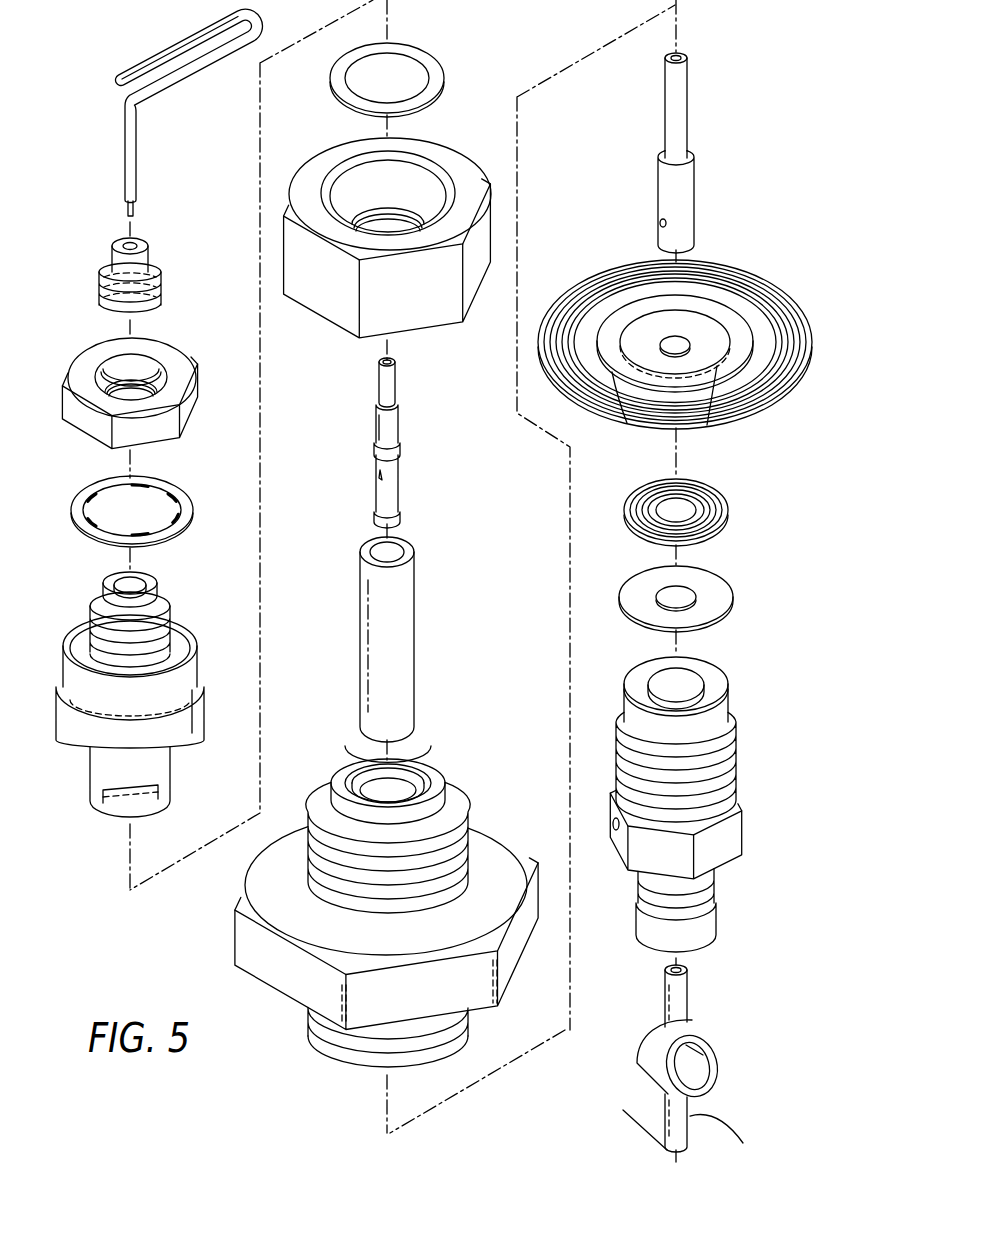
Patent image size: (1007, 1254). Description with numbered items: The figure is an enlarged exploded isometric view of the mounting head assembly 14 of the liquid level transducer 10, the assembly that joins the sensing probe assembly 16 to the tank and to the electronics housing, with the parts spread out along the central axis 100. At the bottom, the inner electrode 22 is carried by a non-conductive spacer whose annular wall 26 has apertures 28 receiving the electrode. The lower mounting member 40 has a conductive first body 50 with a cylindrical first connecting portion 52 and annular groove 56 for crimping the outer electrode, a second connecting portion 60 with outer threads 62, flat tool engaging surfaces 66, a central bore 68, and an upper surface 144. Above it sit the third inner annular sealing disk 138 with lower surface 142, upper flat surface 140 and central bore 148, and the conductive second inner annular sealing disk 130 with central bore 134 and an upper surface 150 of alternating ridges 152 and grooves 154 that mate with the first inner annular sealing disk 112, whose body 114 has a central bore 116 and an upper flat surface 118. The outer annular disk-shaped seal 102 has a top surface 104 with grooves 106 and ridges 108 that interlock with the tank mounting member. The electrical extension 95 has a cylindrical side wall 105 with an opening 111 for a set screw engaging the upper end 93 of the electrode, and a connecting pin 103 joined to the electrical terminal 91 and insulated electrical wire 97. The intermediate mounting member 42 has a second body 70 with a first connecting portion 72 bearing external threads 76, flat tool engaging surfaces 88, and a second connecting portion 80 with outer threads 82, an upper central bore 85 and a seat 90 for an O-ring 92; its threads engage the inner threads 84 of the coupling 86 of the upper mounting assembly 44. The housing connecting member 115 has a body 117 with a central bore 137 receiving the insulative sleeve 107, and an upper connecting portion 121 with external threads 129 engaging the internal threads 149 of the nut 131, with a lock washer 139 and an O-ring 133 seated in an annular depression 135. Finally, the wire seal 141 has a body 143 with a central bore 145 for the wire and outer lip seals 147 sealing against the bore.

The liquid level transducer 10 is at (734, 82).
The mounting head assembly 14 is at (489, 84).
The sensing probe assembly 16 is at (707, 1058).
The inner electrode 22 is at (680, 1108).
The annular wall 26 is at (674, 1056).
The apertures 28 is at (690, 1062).
The lower mounting member 40 is at (705, 790).
The intermediate mounting member 42 is at (353, 915).
The upper mounting assembly 44 is at (69, 327).
The first body 50 is at (699, 725).
The first connecting portion 52 is at (713, 918).
The annular groove 56 is at (717, 890).
The second connecting portion 60 is at (627, 709).
The outer threads 62 is at (616, 770).
The flat tool engaging surfaces 66 is at (732, 840).
The central bore 68 is at (687, 669).
The second body 70 is at (350, 1053).
The first connecting portion 72 is at (357, 1065).
The external threads 76 is at (333, 1045).
The second connecting portion 80 is at (330, 778).
The outer threads 82 is at (308, 838).
The inner threads 84 is at (352, 195).
The upper central bore 85 is at (410, 742).
The coupling 86 is at (388, 223).
The flat tool engaging surfaces 88 is at (270, 978).
The upper step or seat 90 is at (405, 785).
The electrical terminal 91 is at (395, 420).
The O-ring 92 is at (360, 740).
The upper end 93 is at (682, 985).
The electrical extension 95 is at (674, 202).
The insulated electrical wire 97 is at (163, 58).
The central axis 100 is at (432, 624).
The outer annular disk-shaped seal 102 is at (706, 348).
The connecting pin 103 is at (681, 118).
The top surface 104 is at (730, 283).
The cylindrical side wall 105 is at (663, 179).
The grooves 106 is at (795, 332).
The insulative sleeve 107 is at (425, 613).
The ridges 108 is at (797, 355).
The opening 111 is at (661, 224).
The first inner annular sealing disk 112 is at (735, 334).
The body 114 is at (623, 424).
The housing connecting member 115 is at (183, 683).
The central bore 116 is at (657, 337).
The body 117 is at (168, 782).
The upper flat surface 118 is at (704, 425).
The upper connecting portion 121 is at (101, 598).
The external threads 129 is at (190, 672).
The second inner annular sealing disk 130 is at (690, 513).
The nut 131 is at (159, 397).
The O-ring 133 is at (409, 52).
The central bore 134 is at (645, 512).
The annular depression 135 is at (178, 628).
The central bore 137 is at (124, 578).
The third inner annular sealing disk 138 is at (693, 607).
The lock washer 139 is at (187, 508).
The upper flat surface 140 is at (723, 590).
The wire seal 141 is at (150, 258).
The lower surface 142 is at (628, 622).
The body 143 is at (150, 270).
The upper surface 144 is at (724, 687).
The central bore 145 is at (127, 243).
The outer lip seals 147 is at (163, 303).
The central bore 148 is at (658, 584).
The internal threads 149 is at (150, 362).
The upper surface 150 is at (636, 500).
The ridges 152 is at (724, 494).
The grooves 154 is at (633, 512).